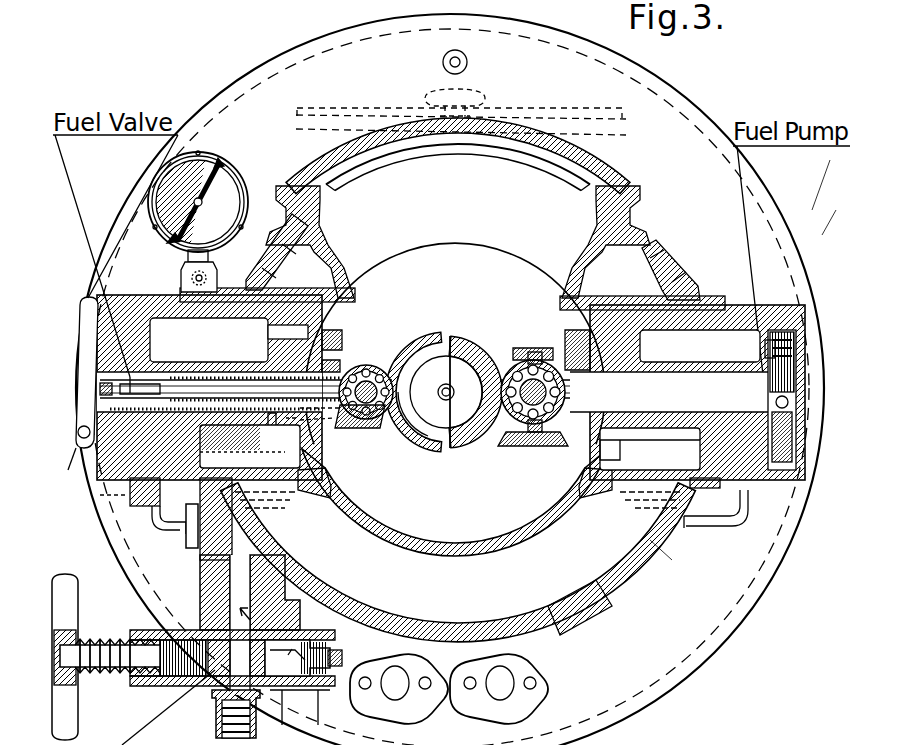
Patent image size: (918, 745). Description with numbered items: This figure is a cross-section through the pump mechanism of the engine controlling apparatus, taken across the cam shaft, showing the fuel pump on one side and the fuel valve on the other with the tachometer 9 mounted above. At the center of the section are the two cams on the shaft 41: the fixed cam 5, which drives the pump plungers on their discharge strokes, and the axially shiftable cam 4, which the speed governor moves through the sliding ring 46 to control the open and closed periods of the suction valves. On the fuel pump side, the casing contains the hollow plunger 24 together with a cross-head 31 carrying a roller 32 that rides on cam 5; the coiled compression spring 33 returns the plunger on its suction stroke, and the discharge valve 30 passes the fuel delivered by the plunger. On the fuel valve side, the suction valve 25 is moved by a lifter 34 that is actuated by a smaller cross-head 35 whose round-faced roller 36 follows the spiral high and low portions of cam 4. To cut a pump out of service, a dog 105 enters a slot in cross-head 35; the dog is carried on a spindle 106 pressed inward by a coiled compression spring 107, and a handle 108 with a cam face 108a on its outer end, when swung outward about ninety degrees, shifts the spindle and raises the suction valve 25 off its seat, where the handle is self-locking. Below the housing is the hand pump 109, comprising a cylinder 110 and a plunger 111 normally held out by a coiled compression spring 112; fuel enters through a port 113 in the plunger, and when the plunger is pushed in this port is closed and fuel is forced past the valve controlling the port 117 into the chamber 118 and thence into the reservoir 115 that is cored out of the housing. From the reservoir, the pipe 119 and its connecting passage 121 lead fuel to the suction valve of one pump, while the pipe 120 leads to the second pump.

The cam 4 is at (440, 336).
The cam 5 is at (488, 356).
The tachometer 9 is at (198, 221).
The plunger 24 is at (805, 470).
The suction valve 25 is at (157, 368).
The discharge valve 30 is at (766, 352).
The cross-head 31 is at (580, 445).
The roller 32 is at (516, 432).
The coiled compression spring 33 is at (630, 440).
The lifter 34 is at (226, 388).
The cross-head 35 is at (352, 426).
The roller 36 is at (376, 370).
The shaft 41 is at (474, 432).
The sliding ring 46 is at (428, 440).
The dog 105 is at (330, 446).
The spindle 106 is at (450, 438).
The coiled compression spring 107 is at (242, 446).
The handle 108 is at (88, 346).
The cam face 108a is at (70, 464).
The hand pump 109 is at (220, 672).
The cylinder 110 is at (217, 630).
The plunger 111 is at (183, 658).
The coiled compression spring 112 is at (108, 644).
The port 113 is at (296, 682).
The reservoir 115 is at (458, 442).
The port 117 is at (214, 706).
The chamber 118 is at (268, 622).
The pipe 119 is at (167, 528).
The pipe 120 is at (718, 540).
The connecting passage 121 is at (100, 497).